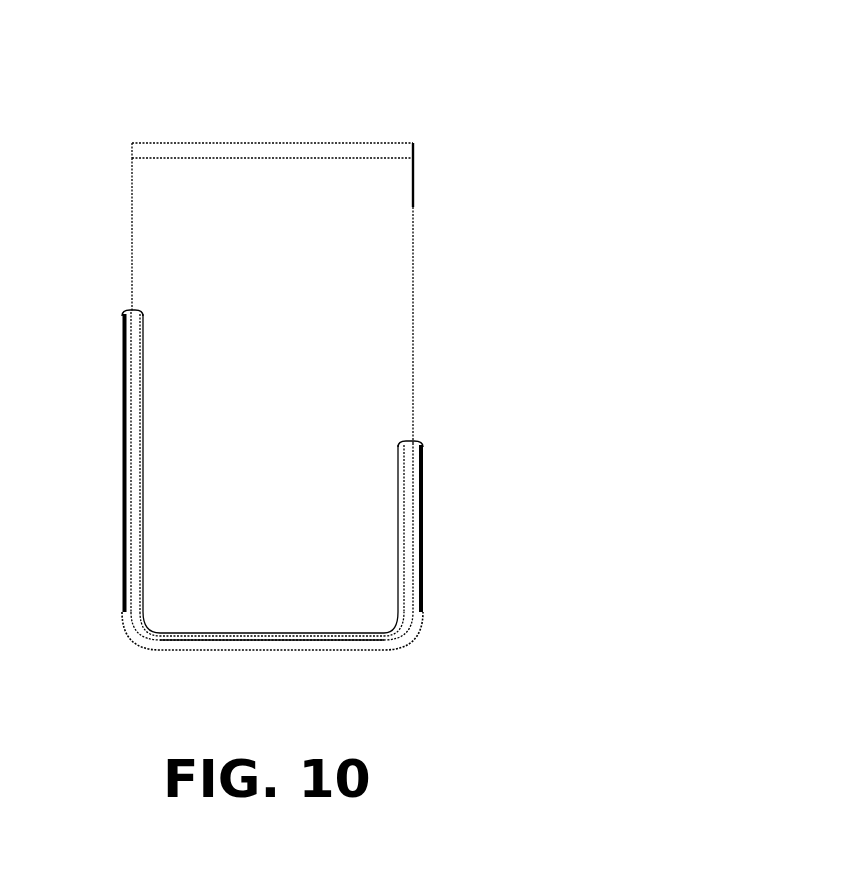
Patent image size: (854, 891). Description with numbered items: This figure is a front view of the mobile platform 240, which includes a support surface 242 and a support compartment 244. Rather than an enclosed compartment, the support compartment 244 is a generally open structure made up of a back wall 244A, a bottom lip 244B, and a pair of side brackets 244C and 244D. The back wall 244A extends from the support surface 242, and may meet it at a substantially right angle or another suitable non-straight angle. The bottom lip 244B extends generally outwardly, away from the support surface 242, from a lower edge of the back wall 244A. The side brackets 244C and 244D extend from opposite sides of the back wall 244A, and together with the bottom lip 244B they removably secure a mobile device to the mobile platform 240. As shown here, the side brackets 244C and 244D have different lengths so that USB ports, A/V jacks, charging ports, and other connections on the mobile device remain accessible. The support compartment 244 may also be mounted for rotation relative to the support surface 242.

The mobile platform 240 is at (426, 56).
The support surface 242 is at (262, 148).
The support compartment 244 is at (372, 352).
The back wall 244A is at (385, 243).
The bottom lip 244B is at (270, 637).
The side bracket 244C is at (122, 451).
The side bracket 244D is at (412, 522).